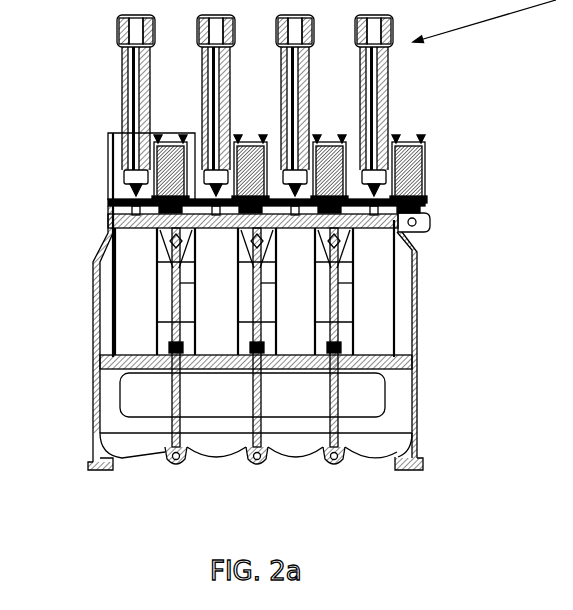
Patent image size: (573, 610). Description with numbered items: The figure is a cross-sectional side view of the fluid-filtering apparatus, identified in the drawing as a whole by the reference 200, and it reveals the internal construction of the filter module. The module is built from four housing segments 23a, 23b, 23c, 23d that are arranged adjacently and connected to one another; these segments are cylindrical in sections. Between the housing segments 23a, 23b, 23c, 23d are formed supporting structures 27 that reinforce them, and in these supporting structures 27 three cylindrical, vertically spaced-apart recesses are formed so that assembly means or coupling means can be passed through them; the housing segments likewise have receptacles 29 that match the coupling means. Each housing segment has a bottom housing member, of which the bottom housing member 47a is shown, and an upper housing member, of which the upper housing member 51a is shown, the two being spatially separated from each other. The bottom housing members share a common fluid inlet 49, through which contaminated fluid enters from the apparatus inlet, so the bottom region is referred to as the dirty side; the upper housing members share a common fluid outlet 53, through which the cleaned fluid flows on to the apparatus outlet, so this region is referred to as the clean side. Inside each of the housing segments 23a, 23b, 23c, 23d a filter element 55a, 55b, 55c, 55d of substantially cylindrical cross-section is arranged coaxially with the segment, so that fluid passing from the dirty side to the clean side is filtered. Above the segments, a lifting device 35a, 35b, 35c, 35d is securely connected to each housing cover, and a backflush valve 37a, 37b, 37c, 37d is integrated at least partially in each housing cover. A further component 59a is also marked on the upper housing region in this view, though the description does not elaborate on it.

The valve assembly 200 is at (112, 176).
The lifting device 35a is at (378, 122).
The lifting device 35b is at (299, 127).
The lifting device 35c is at (219, 120).
The lifting device 35d is at (141, 118).
The backflush valve 37a is at (413, 138).
The backflush valve 37b is at (336, 139).
The backflush valve 37c is at (253, 140).
The backflush valve 37d is at (178, 139).
The fastener 59a is at (418, 214).
The fluid outlet 53 is at (350, 294).
The upper housing member 51a is at (412, 326).
The filter element 55a is at (368, 309).
The filter element 55b is at (295, 339).
The filter element 55c is at (215, 336).
The filter element 55d is at (128, 315).
The fluid inlet 49 is at (318, 403).
The bottom housing member 47a is at (423, 423).
The supporting structure 27 is at (96, 469).
The receptacle 29 is at (260, 223).
The housing segment 23a is at (375, 458).
The housing segment 23b is at (297, 457).
The housing segment 23c is at (225, 465).
The housing segment 23d is at (142, 456).